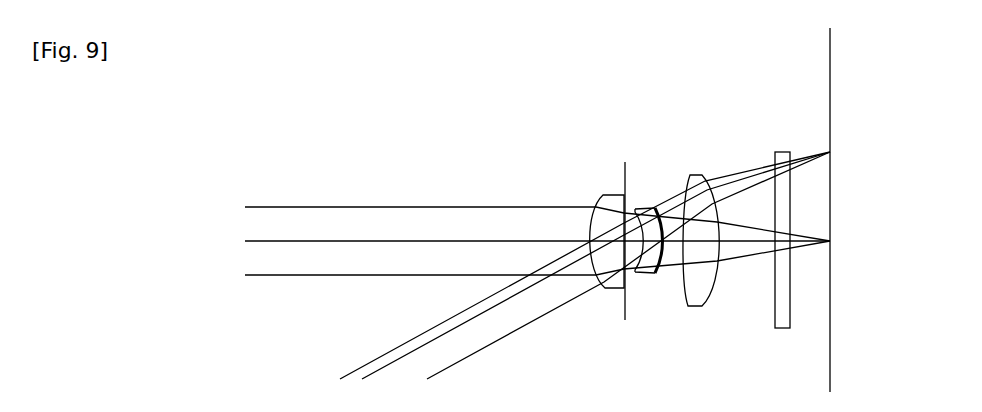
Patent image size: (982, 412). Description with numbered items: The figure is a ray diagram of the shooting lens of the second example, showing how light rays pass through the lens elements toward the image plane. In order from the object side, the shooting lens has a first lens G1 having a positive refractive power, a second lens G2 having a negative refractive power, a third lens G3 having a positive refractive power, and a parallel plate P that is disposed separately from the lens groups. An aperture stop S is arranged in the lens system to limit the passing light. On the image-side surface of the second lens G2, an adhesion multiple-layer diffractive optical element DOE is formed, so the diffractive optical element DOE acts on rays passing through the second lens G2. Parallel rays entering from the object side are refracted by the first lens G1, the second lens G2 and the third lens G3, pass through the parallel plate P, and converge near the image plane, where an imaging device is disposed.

The first lens G1 is at (603, 196).
The aperture stop S is at (626, 172).
The second lens G2 is at (643, 208).
The adhesion multiple-layer diffractive optical element DOE is at (657, 207).
The third lens G3 is at (697, 174).
The parallel plate P is at (782, 151).